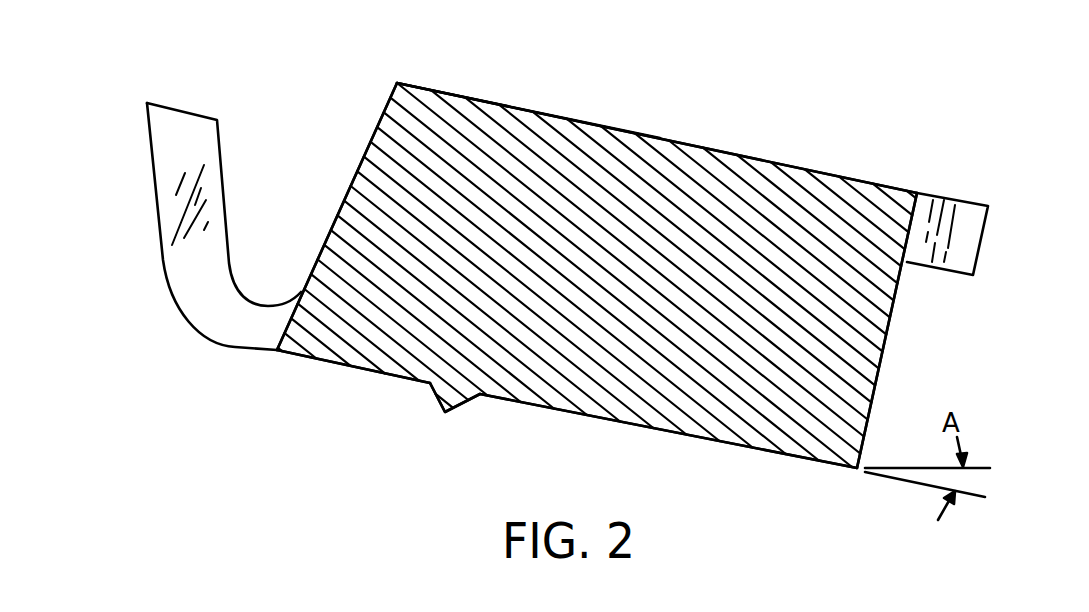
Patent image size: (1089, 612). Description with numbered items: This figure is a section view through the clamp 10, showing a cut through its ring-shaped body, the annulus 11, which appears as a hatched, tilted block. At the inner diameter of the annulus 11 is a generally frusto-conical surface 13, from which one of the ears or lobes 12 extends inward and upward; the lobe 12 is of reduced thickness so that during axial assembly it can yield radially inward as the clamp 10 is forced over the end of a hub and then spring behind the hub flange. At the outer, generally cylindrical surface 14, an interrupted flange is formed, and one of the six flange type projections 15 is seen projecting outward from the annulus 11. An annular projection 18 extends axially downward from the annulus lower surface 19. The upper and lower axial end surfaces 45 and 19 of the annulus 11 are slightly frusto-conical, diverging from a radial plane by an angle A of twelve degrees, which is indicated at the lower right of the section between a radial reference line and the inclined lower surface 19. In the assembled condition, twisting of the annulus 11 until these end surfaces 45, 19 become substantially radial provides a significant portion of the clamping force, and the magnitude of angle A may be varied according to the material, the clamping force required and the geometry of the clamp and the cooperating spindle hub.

The clamp 10 is at (871, 169).
The annulus 11 is at (713, 147).
The lobes 12 is at (157, 193).
The inner diameter frusto-conical surface 13 is at (365, 152).
The outer generally cylindrical surface 14 is at (881, 357).
The flange type projections 15 is at (968, 198).
The annular projection 18 is at (460, 403).
The annulus lower surface 19 is at (652, 431).
The upper axial end surface 45 is at (515, 106).